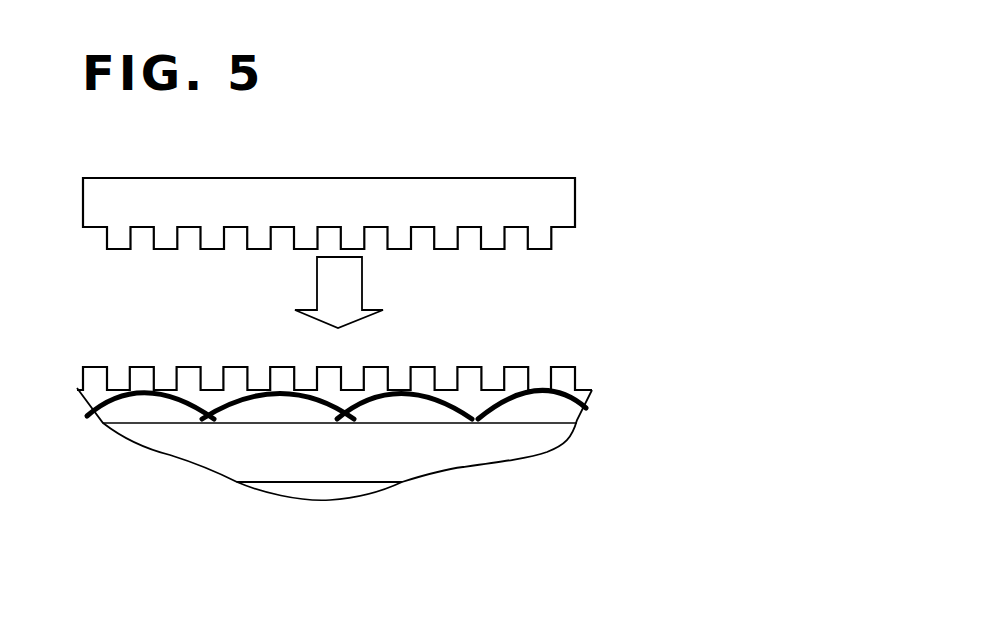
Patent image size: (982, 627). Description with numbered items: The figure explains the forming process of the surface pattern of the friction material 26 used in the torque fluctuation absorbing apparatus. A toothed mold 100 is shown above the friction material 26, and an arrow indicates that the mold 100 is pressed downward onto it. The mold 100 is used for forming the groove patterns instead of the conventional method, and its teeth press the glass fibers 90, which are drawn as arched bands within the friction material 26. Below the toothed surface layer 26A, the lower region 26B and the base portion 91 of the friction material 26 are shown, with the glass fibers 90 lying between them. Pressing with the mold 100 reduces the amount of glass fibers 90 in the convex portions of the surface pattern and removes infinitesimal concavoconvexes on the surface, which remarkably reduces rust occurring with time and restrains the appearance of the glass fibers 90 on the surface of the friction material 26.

The mold 100 is at (522, 183).
The friction material 26 is at (392, 406).
The prism layer (uneven surface layer) 26A is at (510, 370).
The substrate layer 26B is at (543, 412).
The glass fibers 90 is at (558, 395).
The base material 91 is at (183, 450).